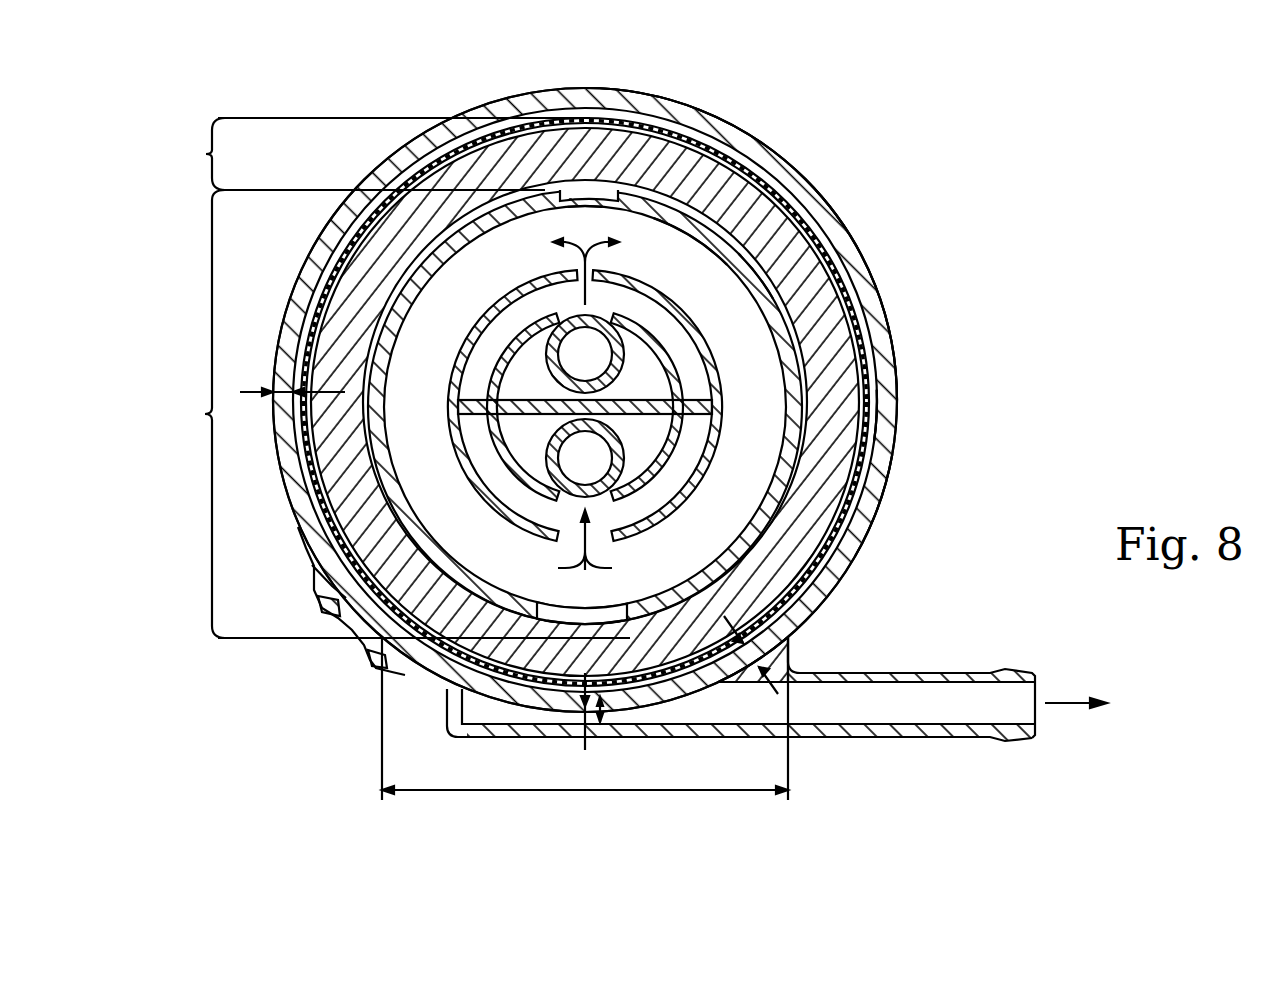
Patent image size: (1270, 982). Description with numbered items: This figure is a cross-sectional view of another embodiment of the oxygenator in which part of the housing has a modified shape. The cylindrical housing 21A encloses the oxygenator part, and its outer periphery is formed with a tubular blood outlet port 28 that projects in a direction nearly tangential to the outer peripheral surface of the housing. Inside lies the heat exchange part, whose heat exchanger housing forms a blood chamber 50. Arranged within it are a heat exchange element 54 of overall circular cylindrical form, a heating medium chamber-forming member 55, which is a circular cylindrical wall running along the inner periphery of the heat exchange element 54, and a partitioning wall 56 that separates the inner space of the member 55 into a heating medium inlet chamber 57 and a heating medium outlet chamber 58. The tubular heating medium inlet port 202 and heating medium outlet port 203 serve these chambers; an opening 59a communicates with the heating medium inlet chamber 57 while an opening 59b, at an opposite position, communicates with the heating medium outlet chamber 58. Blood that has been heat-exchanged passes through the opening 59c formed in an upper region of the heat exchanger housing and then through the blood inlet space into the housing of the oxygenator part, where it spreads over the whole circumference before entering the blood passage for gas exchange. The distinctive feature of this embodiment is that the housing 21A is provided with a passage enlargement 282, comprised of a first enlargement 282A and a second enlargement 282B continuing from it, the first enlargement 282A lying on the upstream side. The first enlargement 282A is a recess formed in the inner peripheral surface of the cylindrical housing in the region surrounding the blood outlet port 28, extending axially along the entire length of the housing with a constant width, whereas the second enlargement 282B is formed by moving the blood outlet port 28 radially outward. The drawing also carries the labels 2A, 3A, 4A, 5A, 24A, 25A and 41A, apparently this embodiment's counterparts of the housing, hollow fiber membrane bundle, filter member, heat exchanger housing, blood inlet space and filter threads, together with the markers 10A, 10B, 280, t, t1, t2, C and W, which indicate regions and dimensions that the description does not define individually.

The upper region 10A is at (375, 154).
The lower region 10B is at (393, 414).
The housing 21A is at (666, 106).
The casing 2A is at (806, 171).
The seal layer 24A is at (727, 160).
The casing wall 25A is at (870, 490).
The inner wall 41A is at (875, 415).
The wall 4A is at (875, 415).
The stator body 3A is at (823, 328).
The inner housing ring 5A is at (793, 370).
The heat exchange element 54 is at (703, 267).
The heating medium chamber-forming member 55 is at (670, 358).
The partitioning wall 56 is at (777, 325).
The heating medium inlet chamber 57 is at (667, 327).
The heating medium outlet chamber 58 is at (805, 560).
The opening 59a is at (596, 265).
The opening 59b is at (600, 537).
The opening 59c is at (590, 196).
The blood chamber 50 is at (568, 615).
The heating medium inlet port 202 is at (585, 354).
The heating medium outlet port 203 is at (585, 458).
The blood outlet port 28 is at (900, 673).
The base plate 280 is at (858, 712).
The passage enlargement 282 is at (358, 653).
The first enlargement 282A is at (440, 665).
The second enlargement 282B is at (473, 728).
The wall thickness t is at (292, 380).
The wall thickness t1 is at (727, 682).
The wall thickness t2 is at (612, 722).
The clearance C is at (583, 728).
The width W is at (585, 719).